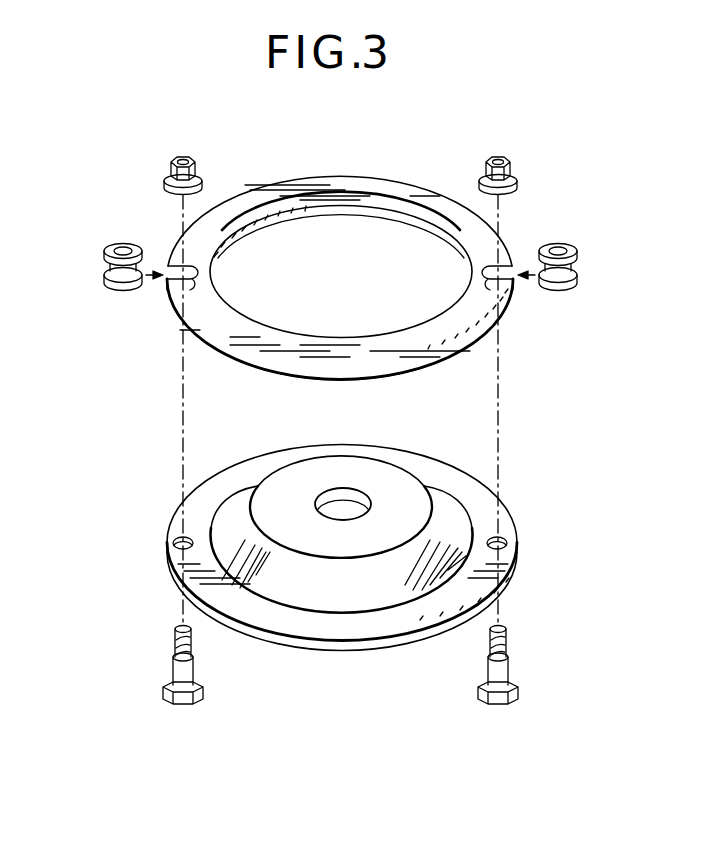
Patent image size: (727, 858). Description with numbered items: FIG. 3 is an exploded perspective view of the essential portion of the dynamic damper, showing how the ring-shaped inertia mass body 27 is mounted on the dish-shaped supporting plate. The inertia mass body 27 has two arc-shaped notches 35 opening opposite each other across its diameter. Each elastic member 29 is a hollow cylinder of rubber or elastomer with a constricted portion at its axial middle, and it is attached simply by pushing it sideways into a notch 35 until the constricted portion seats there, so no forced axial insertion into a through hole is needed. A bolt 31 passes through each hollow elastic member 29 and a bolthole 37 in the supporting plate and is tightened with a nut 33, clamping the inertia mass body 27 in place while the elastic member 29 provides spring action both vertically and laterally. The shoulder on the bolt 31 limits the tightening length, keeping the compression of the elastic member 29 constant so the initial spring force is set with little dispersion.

The inertia mass body 27 is at (485, 315).
The elastic member 29 is at (101, 272).
The bolt 31 is at (170, 672).
The nut 33 is at (172, 160).
The arc-shaped notch 35 is at (510, 256).
The bolthole 37 is at (170, 538).